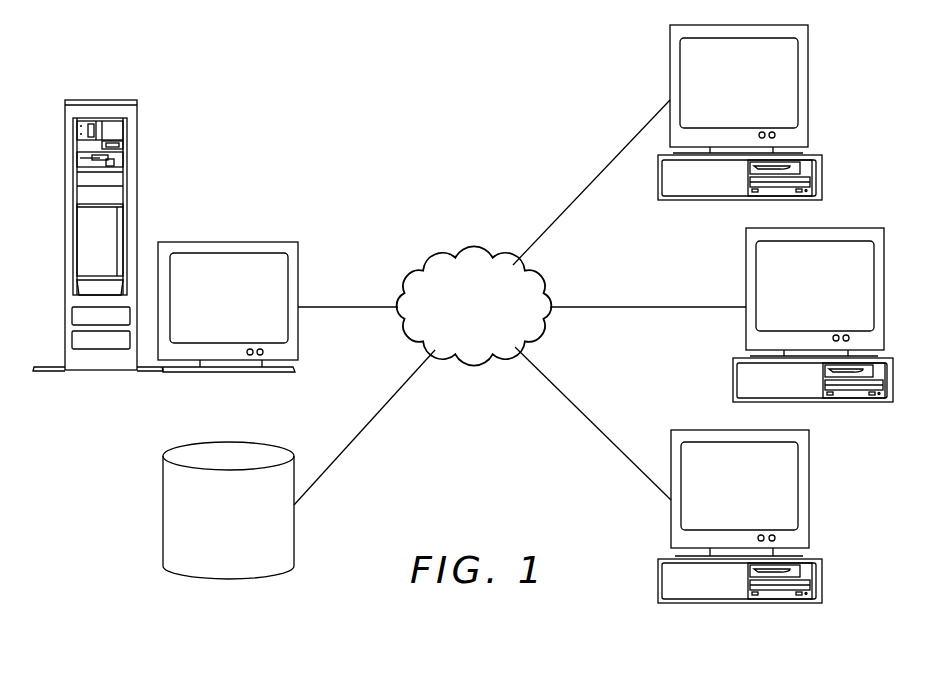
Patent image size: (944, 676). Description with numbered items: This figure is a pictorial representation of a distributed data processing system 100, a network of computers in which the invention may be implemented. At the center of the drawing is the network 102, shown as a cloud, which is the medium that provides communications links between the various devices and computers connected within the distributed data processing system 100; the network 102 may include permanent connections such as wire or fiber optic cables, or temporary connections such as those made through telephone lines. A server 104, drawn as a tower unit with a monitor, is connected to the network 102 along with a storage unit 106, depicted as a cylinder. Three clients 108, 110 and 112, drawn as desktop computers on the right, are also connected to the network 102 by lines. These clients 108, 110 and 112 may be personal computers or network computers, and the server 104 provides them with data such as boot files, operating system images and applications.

The distributed data processing system 100 is at (265, 87).
The network 102 is at (455, 319).
The server 104 is at (210, 308).
The storage unit 106 is at (210, 527).
The client 108 is at (722, 96).
The client 110 is at (797, 298).
The client 112 is at (720, 500).